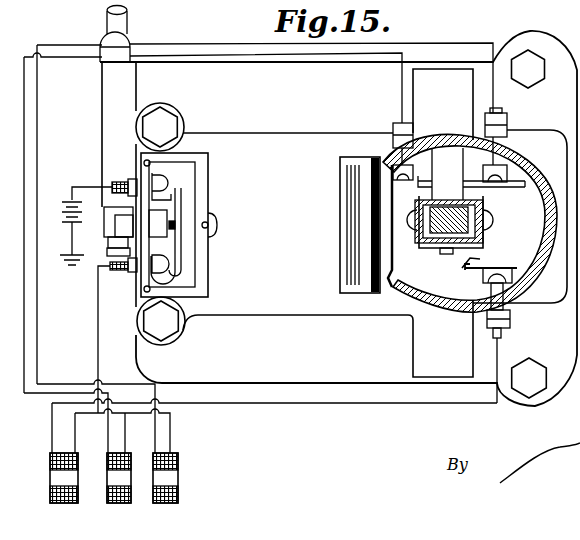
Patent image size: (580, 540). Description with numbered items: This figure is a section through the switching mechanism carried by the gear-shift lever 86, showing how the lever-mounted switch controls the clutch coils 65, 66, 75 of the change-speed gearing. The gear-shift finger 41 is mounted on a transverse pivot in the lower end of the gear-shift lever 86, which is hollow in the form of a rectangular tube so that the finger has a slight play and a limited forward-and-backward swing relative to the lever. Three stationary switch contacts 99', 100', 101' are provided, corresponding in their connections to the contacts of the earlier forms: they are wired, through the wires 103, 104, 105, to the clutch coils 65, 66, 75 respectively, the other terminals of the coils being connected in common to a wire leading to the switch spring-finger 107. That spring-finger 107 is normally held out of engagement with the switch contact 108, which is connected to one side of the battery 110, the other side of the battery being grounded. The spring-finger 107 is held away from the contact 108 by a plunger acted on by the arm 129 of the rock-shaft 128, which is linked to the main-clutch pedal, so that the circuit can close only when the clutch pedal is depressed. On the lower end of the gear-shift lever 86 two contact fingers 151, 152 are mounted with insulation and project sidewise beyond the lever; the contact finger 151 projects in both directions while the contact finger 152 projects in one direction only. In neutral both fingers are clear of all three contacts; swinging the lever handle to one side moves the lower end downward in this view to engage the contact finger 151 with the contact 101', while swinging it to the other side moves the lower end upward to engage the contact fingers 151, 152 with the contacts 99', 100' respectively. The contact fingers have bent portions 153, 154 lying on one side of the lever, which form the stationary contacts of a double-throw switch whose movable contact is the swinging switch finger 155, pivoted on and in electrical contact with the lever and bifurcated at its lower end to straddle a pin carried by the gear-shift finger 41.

The gear-shift finger 41 is at (391, 236).
The clutch coil 65 is at (172, 503).
The clutch coil 66 is at (126, 503).
The clutch coil 75 is at (76, 511).
The gear-shift lever 86 is at (441, 252).
The switch contact 99' is at (468, 195).
The switch contact 100' is at (471, 170).
The switch contact 101' is at (499, 323).
The wire 103 is at (495, 97).
The wire 104 is at (396, 91).
The wire 105 is at (508, 355).
The switch spring-finger 107 is at (181, 208).
The switch contact 108 is at (170, 184).
The battery 110 is at (70, 186).
The rock-shaft 128 is at (100, 270).
The arm 129 is at (122, 229).
The contact finger 151 is at (484, 240).
The contact finger 152 is at (404, 181).
The bent portion 153 is at (467, 265).
The bent portion 154 is at (393, 287).
The switch finger 155 is at (414, 248).